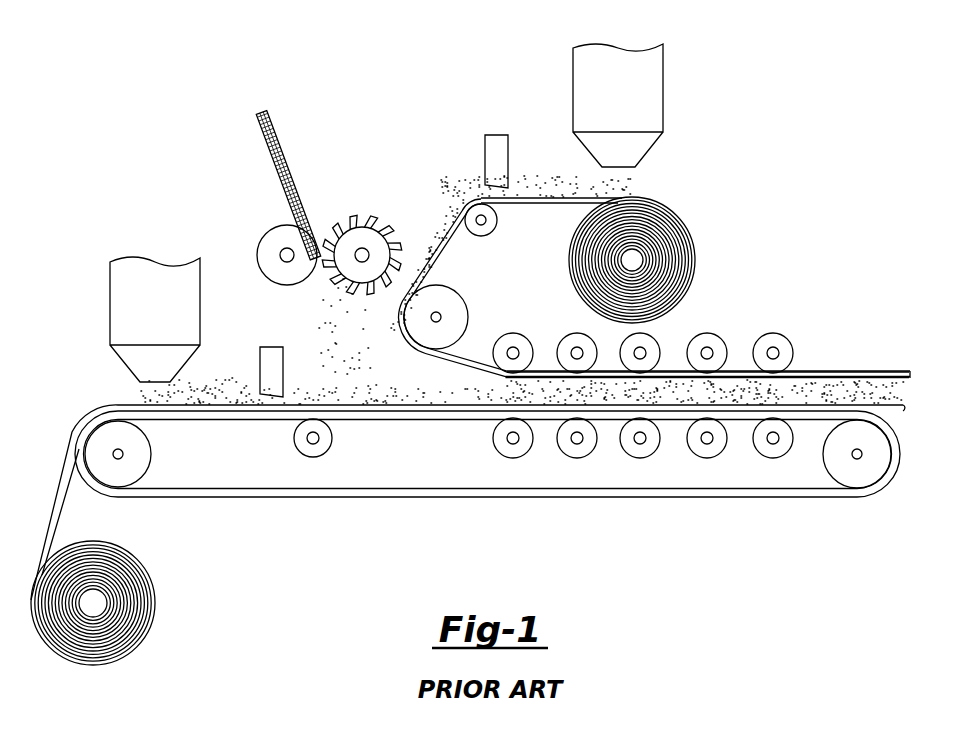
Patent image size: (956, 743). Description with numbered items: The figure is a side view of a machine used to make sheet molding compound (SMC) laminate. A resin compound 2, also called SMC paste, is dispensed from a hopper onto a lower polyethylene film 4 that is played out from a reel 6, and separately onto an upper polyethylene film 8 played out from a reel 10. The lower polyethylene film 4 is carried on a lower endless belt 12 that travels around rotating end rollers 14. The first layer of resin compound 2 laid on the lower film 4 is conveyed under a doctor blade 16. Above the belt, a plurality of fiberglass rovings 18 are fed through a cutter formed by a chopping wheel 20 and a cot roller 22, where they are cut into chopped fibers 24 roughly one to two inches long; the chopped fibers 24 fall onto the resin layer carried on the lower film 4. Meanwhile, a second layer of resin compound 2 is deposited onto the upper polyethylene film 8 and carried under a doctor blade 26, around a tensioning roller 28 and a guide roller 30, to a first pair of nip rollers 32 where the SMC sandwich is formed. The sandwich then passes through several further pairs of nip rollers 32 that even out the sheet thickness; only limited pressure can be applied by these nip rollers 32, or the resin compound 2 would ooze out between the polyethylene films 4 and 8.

The resin compound 2 is at (233, 392).
The lower polyethylene film 4 is at (56, 496).
The reel 6 is at (93, 603).
The upper polyethylene film 8 is at (655, 233).
The reel 10 is at (634, 260).
The lower endless belt 12 is at (277, 498).
The end rollers 14 is at (122, 454).
The doctor blade 16 is at (262, 346).
The fiberglass rovings 18 is at (285, 158).
The chopping wheel 20 is at (366, 228).
The cot roller 22 is at (262, 252).
The chopped fibers 24 is at (330, 340).
The doctor blade 26 is at (497, 135).
The tensioning roller 28 is at (497, 216).
The guide roller 30 is at (458, 305).
The nip rollers 32 is at (566, 336).